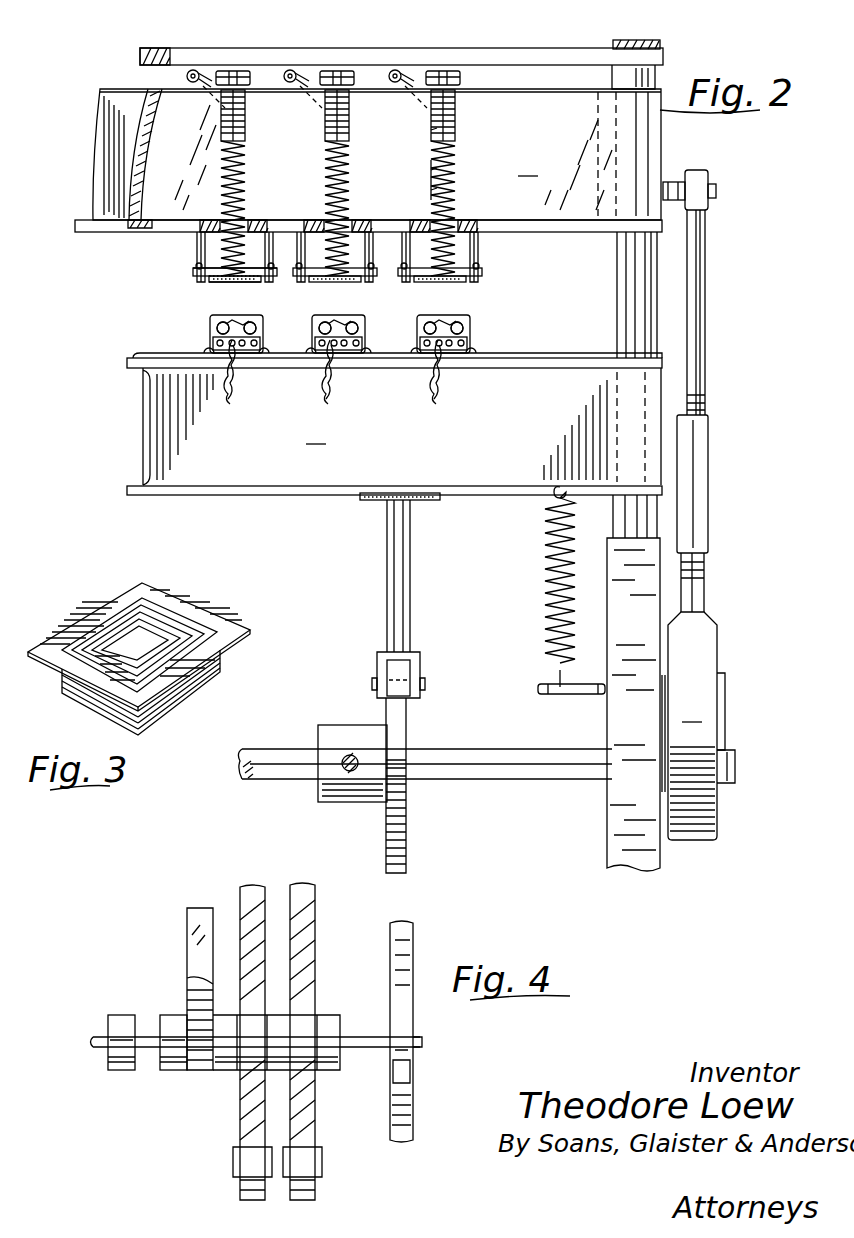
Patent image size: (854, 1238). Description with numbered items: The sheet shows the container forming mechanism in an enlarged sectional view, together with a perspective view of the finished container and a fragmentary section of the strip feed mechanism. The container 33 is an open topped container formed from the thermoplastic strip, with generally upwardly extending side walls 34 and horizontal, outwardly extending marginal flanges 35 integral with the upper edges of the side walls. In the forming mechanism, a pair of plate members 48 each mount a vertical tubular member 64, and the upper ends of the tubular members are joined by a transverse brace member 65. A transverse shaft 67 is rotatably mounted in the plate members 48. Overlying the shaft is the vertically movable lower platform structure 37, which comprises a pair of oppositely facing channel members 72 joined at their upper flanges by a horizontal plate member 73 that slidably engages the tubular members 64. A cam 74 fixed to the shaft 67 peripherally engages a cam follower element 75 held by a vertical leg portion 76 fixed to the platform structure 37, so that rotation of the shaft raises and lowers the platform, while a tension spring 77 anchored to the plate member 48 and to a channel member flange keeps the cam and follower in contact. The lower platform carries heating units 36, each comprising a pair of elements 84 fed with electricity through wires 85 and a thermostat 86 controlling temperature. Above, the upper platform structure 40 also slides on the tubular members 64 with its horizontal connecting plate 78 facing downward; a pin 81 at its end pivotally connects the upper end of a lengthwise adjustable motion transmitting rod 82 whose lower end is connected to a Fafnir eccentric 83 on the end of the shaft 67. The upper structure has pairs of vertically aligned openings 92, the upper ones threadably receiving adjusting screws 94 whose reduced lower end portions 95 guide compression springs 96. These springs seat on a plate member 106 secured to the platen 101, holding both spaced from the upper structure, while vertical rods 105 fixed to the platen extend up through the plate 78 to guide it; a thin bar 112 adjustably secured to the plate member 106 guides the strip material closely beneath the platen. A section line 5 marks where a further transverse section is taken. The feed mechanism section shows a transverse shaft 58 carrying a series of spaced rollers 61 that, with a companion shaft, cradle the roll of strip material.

In FIG. 2, the section line 5 is at (428, 15).
In FIG. 3, the open topped container 33 is at (236, 671).
In FIG. 3, the side walls 34 is at (185, 690).
In FIG. 3, the marginal flanges 35 is at (102, 615).
In FIG. 2, the heating unit 36 is at (201, 331).
In FIG. 2, the lower platform structure 37 is at (402, 426).
In FIG. 2, the upper platform structure 40 is at (377, 154).
In FIG. 2, the plate members 48 is at (607, 828).
In FIG. 4, the transverse shaft 58 is at (372, 1040).
In FIG. 4, the rollers 61 is at (174, 1070).
In FIG. 2, the vertical tubular member 64 is at (660, 288).
In FIG. 2, the transverse brace member 65 is at (562, 47).
In FIG. 2, the transverse shaft 67 is at (470, 776).
In FIG. 2, the channel members 72 is at (276, 478).
In FIG. 2, the horizontal plate member 73 is at (516, 358).
In FIG. 2, the cam 74 is at (408, 726).
In FIG. 2, the cam follower element 75 is at (420, 676).
In FIG. 2, the vertical leg portion 76 is at (412, 594).
In FIG. 2, the tension spring 77 is at (542, 598).
In FIG. 2, the horizontal connecting plate 78 is at (545, 232).
In FIG. 2, the outwardly projecting pin 81 is at (716, 190).
In FIG. 2, the motion transmitting rod 82 is at (706, 320).
In FIG. 2, the Fafnir eccentric 83 is at (698, 726).
In FIG. 2, the heating elements 84 is at (250, 322).
In FIG. 2, the wires 85 is at (446, 376).
In FIG. 2, the thermostat 86 is at (366, 337).
In FIG. 2, the vertically aligned openings 92 is at (244, 222).
In FIG. 2, the adjusting screw 94 is at (455, 118).
In FIG. 2, the reduced lower end portion 95 is at (430, 192).
In FIG. 2, the compression spring 96 is at (430, 159).
In FIG. 2, the platen 101 is at (213, 295).
In FIG. 2, the vertical rods 105 is at (197, 244).
In FIG. 2, the elongated plate member 106 is at (200, 278).
In FIG. 2, the thin bar 112 is at (190, 288).